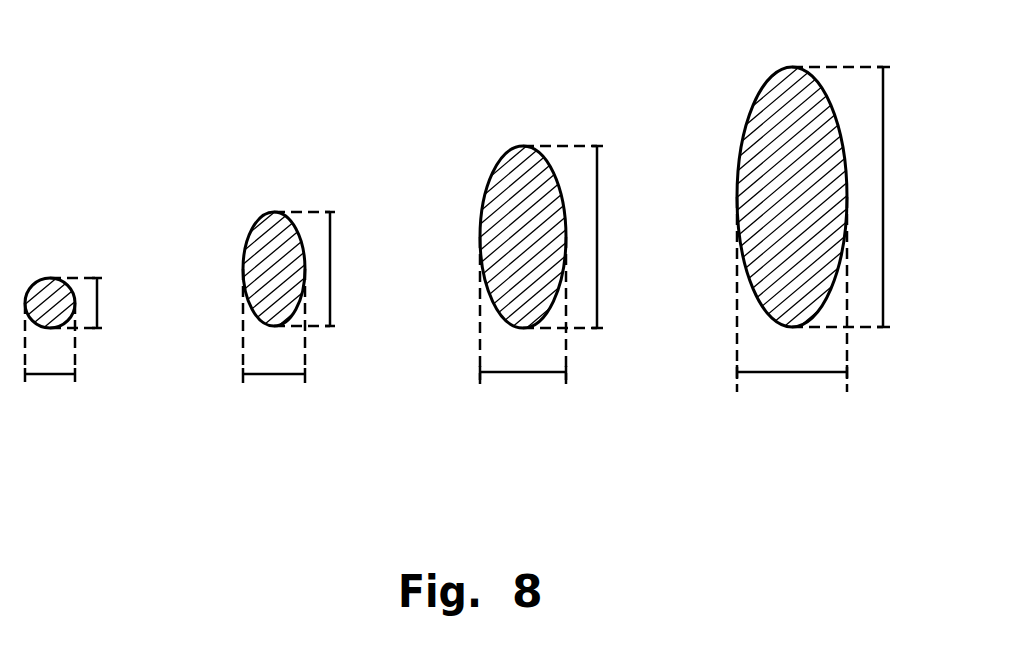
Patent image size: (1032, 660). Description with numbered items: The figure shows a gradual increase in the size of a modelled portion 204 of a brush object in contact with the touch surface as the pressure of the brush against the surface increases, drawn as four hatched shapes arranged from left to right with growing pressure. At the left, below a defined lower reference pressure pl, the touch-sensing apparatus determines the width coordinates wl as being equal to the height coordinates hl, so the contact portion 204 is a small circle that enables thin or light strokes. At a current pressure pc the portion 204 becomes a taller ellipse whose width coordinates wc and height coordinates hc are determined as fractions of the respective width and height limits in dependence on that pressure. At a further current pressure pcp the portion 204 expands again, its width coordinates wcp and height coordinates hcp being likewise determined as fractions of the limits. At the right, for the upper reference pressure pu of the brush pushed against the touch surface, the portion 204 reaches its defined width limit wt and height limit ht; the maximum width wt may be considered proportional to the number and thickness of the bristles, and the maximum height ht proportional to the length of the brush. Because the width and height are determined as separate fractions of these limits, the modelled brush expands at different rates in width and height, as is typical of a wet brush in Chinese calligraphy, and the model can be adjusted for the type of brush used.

The portion of the object in contact with the touch surface 204 is at (497, 243).
The lower reference pressure pl is at (50, 358).
The height coordinates below lower reference pressure hl is at (94, 303).
The width coordinates below lower reference pressure wl is at (50, 364).
The current pressure pc is at (274, 321).
The height coordinates hc is at (323, 269).
The width coordinates wc is at (274, 347).
The current pressure pcp is at (523, 277).
The height coordinates hcp is at (585, 237).
The width coordinates wcp is at (523, 331).
The upper reference pressure pu is at (792, 243).
The height limit ht is at (858, 197).
The width limit wt is at (792, 309).